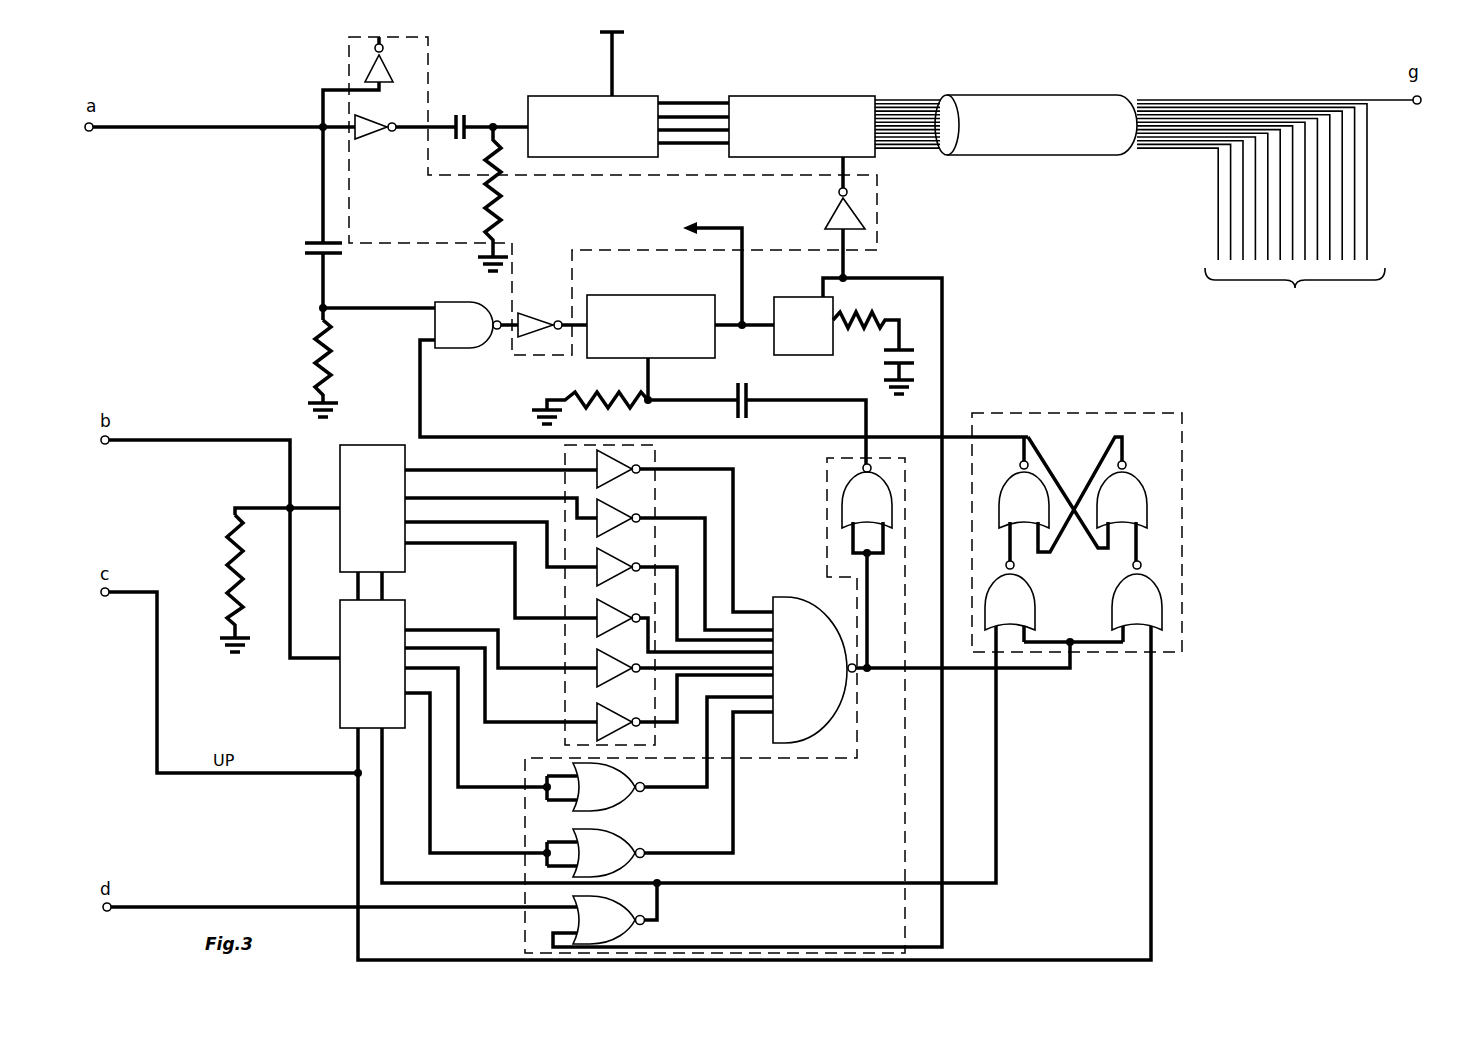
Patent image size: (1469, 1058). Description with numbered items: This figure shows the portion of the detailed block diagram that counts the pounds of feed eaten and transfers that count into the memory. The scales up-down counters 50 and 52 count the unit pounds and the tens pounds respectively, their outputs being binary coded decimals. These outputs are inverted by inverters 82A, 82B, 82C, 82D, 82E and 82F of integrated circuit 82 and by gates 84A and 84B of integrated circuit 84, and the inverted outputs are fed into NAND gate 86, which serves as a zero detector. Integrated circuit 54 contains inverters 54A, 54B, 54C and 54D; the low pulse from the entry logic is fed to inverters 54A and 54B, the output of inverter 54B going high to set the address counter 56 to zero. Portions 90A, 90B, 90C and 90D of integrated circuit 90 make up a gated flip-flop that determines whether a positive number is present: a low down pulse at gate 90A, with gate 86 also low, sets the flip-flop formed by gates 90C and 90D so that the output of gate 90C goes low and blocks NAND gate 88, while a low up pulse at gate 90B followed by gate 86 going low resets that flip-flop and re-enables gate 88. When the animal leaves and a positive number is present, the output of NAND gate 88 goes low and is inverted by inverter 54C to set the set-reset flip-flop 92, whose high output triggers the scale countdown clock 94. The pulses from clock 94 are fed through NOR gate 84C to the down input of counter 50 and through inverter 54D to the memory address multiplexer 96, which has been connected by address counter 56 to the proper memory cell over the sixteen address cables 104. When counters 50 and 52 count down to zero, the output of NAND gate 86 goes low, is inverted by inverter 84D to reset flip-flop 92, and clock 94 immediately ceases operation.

The up-down counter 50 is at (340, 708).
The up-down counter 52 is at (387, 445).
The integrated circuit 54 is at (437, 245).
The inverter 54A is at (370, 68).
The inverter 54B is at (372, 132).
The inverter 54C is at (530, 318).
The inverter 54D is at (855, 213).
The address counter 56 is at (630, 96).
The integrated circuit 82 is at (565, 657).
The inverter 82A is at (597, 462).
The inverter 82B is at (615, 514).
The inverter 82C is at (615, 564).
The inverter 82D is at (597, 612).
The inverter 82E is at (597, 675).
The inverter 82F is at (597, 728).
The integrated circuit 84 is at (525, 816).
The inverter 84A is at (620, 790).
The inverter 84B is at (620, 850).
The NOR gate 84C is at (610, 932).
The inverter 84D is at (853, 490).
The NAND gate 86 is at (790, 602).
The NAND gate 88 is at (462, 335).
The integrated circuit 90 is at (1182, 520).
The gate 90A is at (1018, 598).
The gate 90B is at (1143, 612).
The gate 90C is at (1038, 495).
The gate 90D is at (1132, 490).
The set-reset flip-flop 92 is at (672, 295).
The clock 94 is at (812, 297).
The memory address multiplexer 96 is at (851, 96).
The address cables 104 is at (1088, 100).